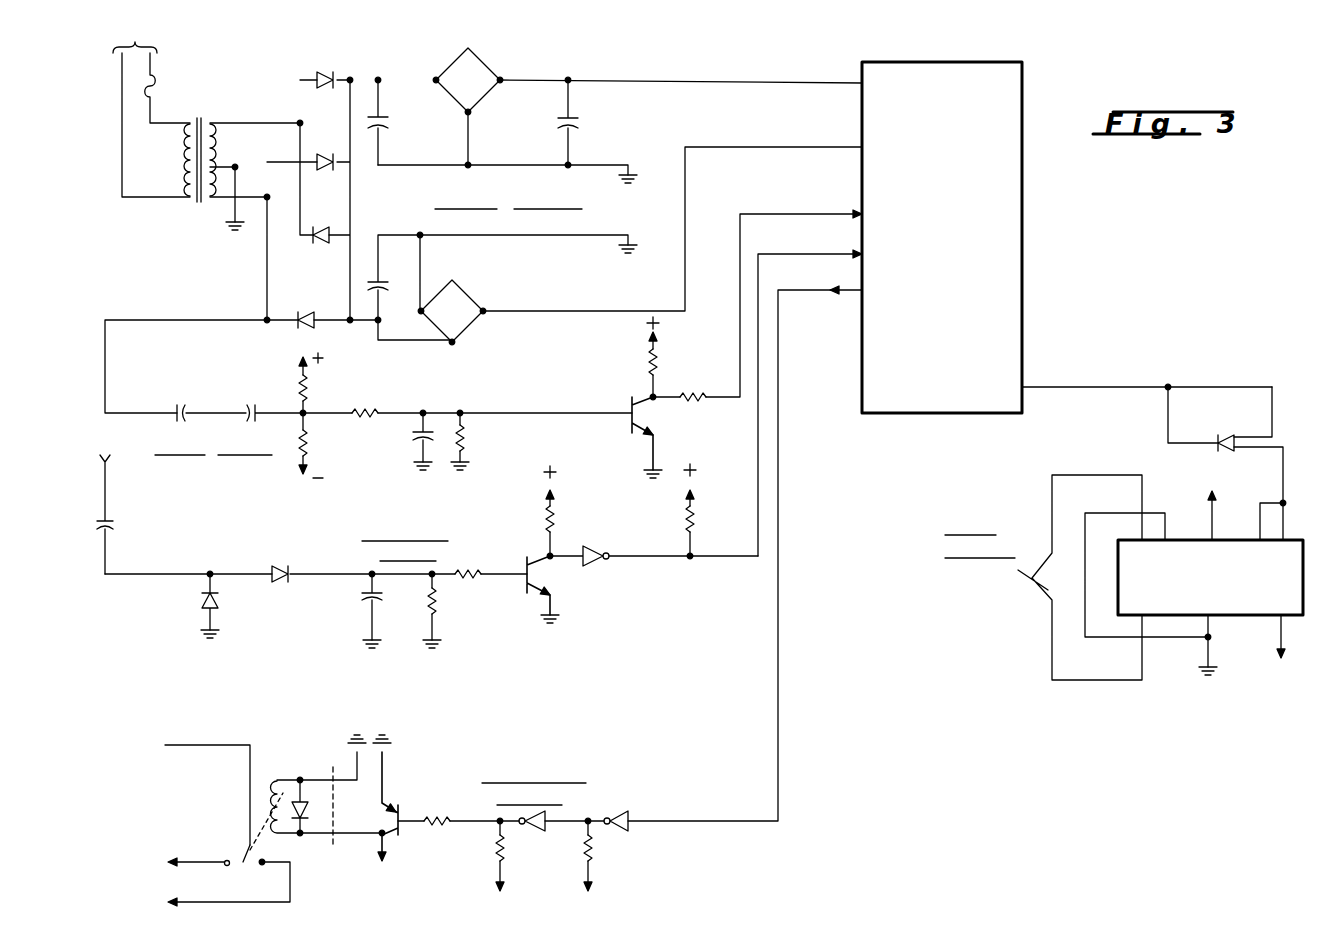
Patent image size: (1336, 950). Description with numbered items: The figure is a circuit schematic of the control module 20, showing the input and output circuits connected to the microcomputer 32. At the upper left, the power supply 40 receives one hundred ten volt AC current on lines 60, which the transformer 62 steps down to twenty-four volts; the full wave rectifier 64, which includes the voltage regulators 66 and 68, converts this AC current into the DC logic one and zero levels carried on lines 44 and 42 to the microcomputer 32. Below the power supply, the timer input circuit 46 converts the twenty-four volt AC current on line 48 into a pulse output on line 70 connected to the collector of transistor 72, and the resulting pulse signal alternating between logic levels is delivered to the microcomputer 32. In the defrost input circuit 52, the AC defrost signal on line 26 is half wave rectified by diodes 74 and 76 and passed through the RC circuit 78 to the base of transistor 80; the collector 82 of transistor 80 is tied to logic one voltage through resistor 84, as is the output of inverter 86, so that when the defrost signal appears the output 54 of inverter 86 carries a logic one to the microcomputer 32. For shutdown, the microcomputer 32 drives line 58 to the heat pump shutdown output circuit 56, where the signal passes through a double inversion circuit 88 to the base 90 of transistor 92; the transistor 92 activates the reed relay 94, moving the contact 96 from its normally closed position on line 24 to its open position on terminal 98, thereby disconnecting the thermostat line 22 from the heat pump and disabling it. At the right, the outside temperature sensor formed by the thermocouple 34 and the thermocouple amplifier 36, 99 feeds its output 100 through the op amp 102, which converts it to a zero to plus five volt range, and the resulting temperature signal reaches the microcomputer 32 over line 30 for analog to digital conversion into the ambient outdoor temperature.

The control module 20 is at (750, 840).
The thermostat line 22 is at (197, 745).
The line to heat pump 24 is at (193, 904).
The AC defrost signal line 26 is at (108, 503).
The temperature signal line 30 is at (1044, 386).
The microcomputer 32 is at (1024, 94).
The thermocouple 34 is at (1040, 590).
The thermocouple amplifier 36 is at (1131, 520).
The power supply 40 is at (487, 187).
The power supply output line 42 is at (718, 147).
The power supply output line 44 is at (695, 82).
The timer input circuit 46 is at (483, 344).
The timer input line 48 is at (120, 410).
The defrost input circuit 52 is at (479, 450).
The inverter output 54 is at (755, 426).
The heat pump shutdown output circuit 56 is at (407, 815).
The shutdown signal line 58 is at (779, 640).
The AC input lines 60 is at (163, 60).
The transformer 62 is at (202, 115).
The full wave rectifier 64 is at (376, 74).
The voltage regulator 66 is at (483, 63).
The voltage regulator 68 is at (456, 288).
The pulse output line 70 is at (662, 392).
The transistor 72 is at (629, 406).
The diode 74 is at (218, 600).
The diode 76 is at (284, 588).
The RC circuit 78 is at (456, 604).
The transistor 80 is at (549, 578).
The collector 82 is at (538, 552).
The resistor 84 is at (554, 512).
The inverter 86 is at (590, 546).
The double inversion circuit 88 is at (542, 846).
The base 90 is at (402, 821).
The transistor 92 is at (386, 770).
The reed relay 94 is at (277, 768).
The contact 96 is at (268, 860).
The terminal 98 is at (194, 860).
The thermocouple amplifier 99 is at (1213, 617).
The amplifier output 100 is at (1283, 470).
The op amp 102 is at (1220, 439).